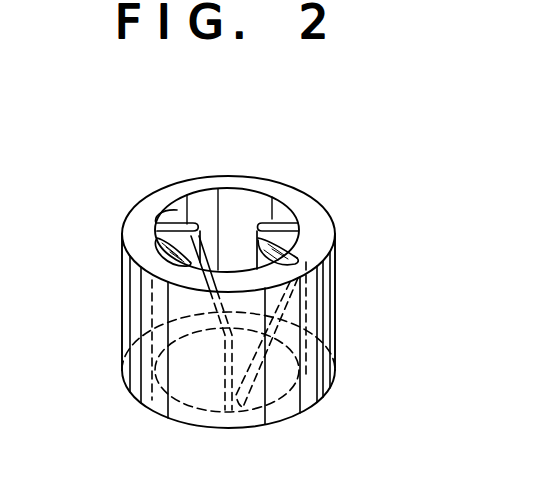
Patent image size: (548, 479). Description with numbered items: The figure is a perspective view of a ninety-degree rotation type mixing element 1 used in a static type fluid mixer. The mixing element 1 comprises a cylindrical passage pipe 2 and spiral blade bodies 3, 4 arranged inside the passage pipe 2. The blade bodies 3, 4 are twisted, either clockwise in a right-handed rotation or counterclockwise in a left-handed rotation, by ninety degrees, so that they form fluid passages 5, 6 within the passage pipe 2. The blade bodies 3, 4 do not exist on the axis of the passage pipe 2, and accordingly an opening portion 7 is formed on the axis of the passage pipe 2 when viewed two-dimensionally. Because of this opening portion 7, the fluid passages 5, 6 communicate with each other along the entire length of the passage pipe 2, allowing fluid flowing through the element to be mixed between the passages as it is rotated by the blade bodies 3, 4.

The mixing element 1 is at (370, 277).
The passage pipe 2 is at (338, 343).
The spiral blade body 3 is at (177, 212).
The spiral blade body 4 is at (287, 205).
The fluid passage 5 is at (172, 290).
The fluid passage 6 is at (268, 208).
The opening portion 7 is at (232, 228).